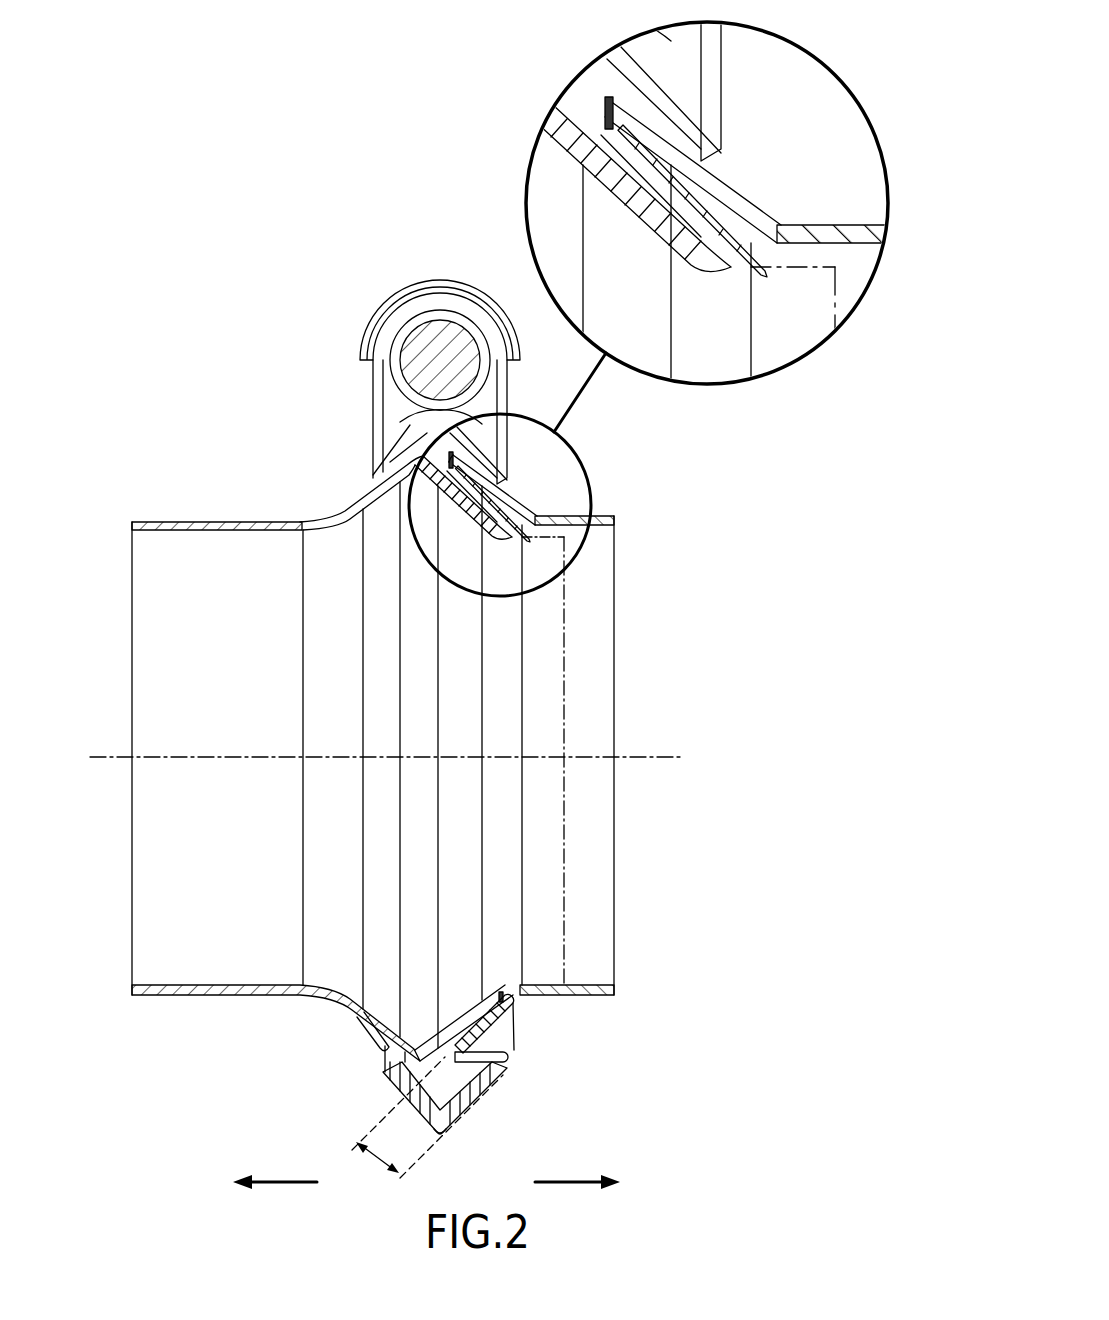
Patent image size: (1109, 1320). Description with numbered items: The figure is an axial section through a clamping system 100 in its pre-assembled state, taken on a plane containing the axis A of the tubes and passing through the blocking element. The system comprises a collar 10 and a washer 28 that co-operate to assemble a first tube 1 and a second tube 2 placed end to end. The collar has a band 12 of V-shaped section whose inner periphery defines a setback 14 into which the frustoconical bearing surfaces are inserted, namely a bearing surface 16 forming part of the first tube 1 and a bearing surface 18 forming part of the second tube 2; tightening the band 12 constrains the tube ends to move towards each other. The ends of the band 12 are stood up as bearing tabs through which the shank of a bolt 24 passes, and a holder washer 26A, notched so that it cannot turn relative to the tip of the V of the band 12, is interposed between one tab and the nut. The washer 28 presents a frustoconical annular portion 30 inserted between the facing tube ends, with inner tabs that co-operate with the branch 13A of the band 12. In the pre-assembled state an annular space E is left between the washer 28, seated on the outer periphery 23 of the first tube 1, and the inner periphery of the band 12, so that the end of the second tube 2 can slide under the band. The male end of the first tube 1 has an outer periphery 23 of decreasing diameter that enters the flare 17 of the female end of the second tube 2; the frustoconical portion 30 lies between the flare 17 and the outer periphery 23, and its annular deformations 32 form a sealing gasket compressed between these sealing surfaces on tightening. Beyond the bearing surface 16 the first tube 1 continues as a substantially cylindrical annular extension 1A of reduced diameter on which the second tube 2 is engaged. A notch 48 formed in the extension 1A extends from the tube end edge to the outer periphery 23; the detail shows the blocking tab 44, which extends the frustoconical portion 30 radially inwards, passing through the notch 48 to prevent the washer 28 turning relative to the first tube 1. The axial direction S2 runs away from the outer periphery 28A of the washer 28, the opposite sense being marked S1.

The assembly 100 is at (170, 362).
The collar 10 is at (324, 400).
The first tube 1 is at (216, 521).
The annular extension 1A is at (553, 626).
The second tube 2 is at (606, 516).
The band 12 is at (452, 1136).
The branch 13A is at (485, 1091).
The setback 14 is at (420, 1043).
The bearing surface 16 is at (371, 1043).
The flare 17 is at (508, 1018).
The bearing surface 18 is at (508, 1047).
The outer periphery 23 is at (476, 506).
The bolt 24 is at (414, 346).
The holder washer 26A is at (440, 283).
The washer 28 is at (492, 1002).
The outer periphery 28A is at (631, 118).
The frustoconical annular portion 30 is at (684, 119).
The annular deformations 32 is at (655, 177).
The blocking tab 44 is at (523, 540).
The notch 48 is at (793, 264).
The axis A is at (666, 757).
The annular space E is at (427, 1117).
The direction S1 is at (275, 1172).
The axial direction S2 is at (577, 1172).